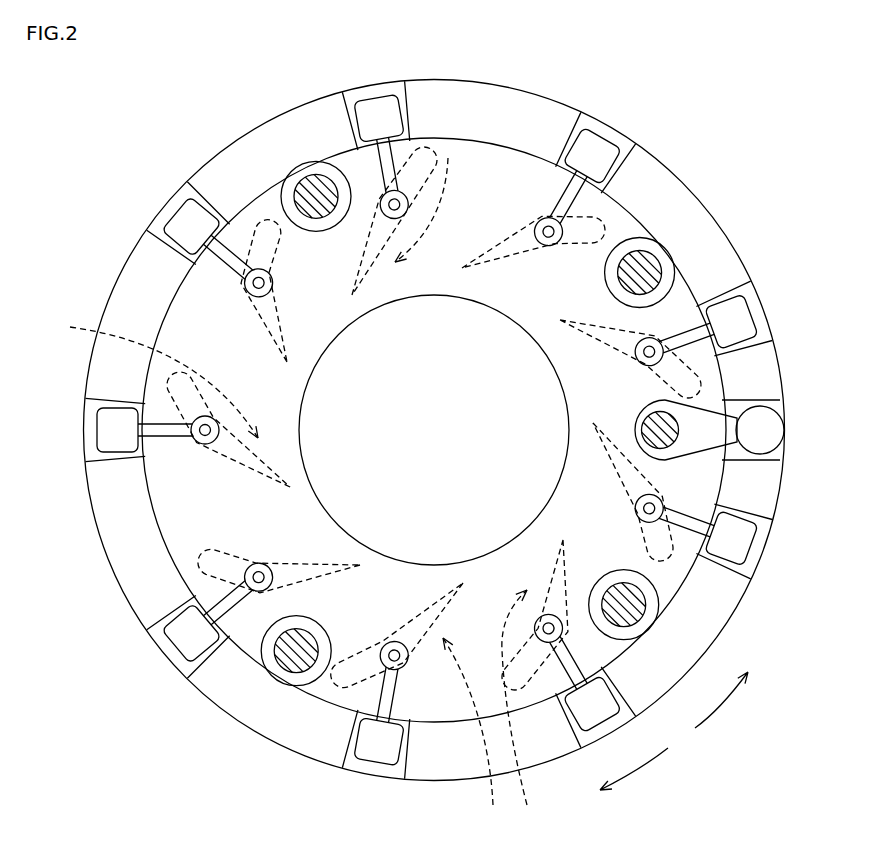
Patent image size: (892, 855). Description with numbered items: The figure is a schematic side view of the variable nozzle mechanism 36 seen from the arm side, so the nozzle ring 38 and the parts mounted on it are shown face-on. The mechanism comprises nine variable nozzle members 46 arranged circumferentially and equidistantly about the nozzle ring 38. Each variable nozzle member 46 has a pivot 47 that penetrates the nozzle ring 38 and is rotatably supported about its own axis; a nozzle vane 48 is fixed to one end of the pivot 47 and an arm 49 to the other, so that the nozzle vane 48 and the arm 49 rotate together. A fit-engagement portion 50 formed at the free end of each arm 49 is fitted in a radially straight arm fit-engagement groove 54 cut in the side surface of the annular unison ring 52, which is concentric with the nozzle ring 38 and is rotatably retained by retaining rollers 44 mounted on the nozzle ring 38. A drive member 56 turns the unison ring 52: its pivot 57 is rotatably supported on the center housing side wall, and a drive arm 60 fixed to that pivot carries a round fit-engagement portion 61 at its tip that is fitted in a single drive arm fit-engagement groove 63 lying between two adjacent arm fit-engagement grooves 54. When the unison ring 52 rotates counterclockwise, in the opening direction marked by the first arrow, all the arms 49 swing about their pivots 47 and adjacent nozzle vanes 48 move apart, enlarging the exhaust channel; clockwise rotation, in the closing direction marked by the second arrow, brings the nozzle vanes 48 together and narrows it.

The variable nozzle mechanism 36 is at (637, 110).
The nozzle ring 38 is at (515, 172).
The retaining roller 44 is at (645, 268).
The variable nozzle member 46 is at (437, 217).
The pivot 47 is at (378, 195).
The nozzle vane 48 is at (442, 163).
The arm 49 is at (387, 165).
The fit-engagement portion 50 is at (378, 113).
The unison ring 52 is at (137, 278).
The arm fit-engagement groove 54 is at (362, 95).
The drive member 56 is at (708, 398).
The pivot 57 is at (672, 458).
The drive arm 60 is at (697, 442).
The fit-engagement portion 61 is at (772, 430).
The drive arm fit-engagement groove 63 is at (779, 420).